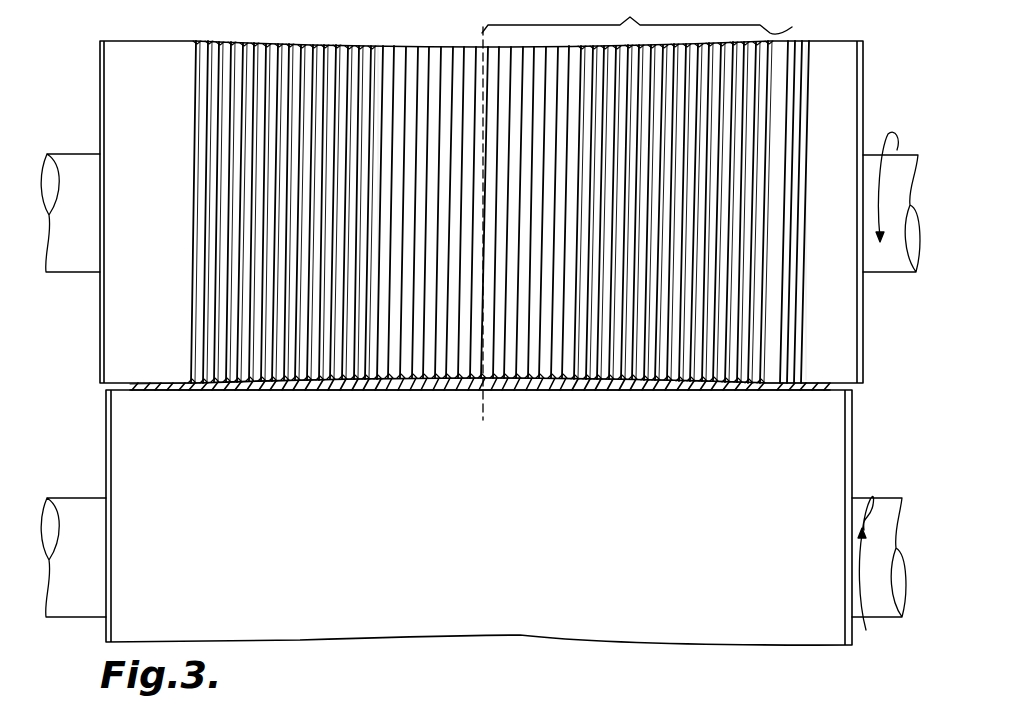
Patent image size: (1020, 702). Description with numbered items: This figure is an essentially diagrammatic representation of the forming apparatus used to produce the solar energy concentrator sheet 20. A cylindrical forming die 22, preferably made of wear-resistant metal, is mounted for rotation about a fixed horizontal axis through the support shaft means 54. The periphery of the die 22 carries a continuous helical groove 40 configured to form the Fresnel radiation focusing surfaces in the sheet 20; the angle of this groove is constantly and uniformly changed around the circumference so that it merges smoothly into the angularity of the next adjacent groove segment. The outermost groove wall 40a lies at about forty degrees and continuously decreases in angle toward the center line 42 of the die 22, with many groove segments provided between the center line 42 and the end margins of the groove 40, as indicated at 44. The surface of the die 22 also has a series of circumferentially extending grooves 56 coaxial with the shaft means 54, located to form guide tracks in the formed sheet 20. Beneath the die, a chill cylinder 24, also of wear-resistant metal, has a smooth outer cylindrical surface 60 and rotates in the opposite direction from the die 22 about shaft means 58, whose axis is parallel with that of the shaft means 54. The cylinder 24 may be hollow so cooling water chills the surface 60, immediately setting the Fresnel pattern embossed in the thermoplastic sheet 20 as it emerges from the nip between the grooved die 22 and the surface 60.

The solar energy concentrator sheet 20 is at (409, 391).
The forming die 22 is at (100, 75).
The chill cylinder 24 is at (106, 432).
The continuous helical groove 40 is at (378, 44).
The outermost groove wall 40a is at (765, 392).
The center line 42 is at (483, 30).
The end margin of the groove 44 is at (655, 28).
The support shaft means 54 is at (67, 262).
The circumferentially extending grooves 56 is at (806, 178).
The shaft means 58 is at (79, 607).
The outer cylindrical surface 60 is at (462, 557).